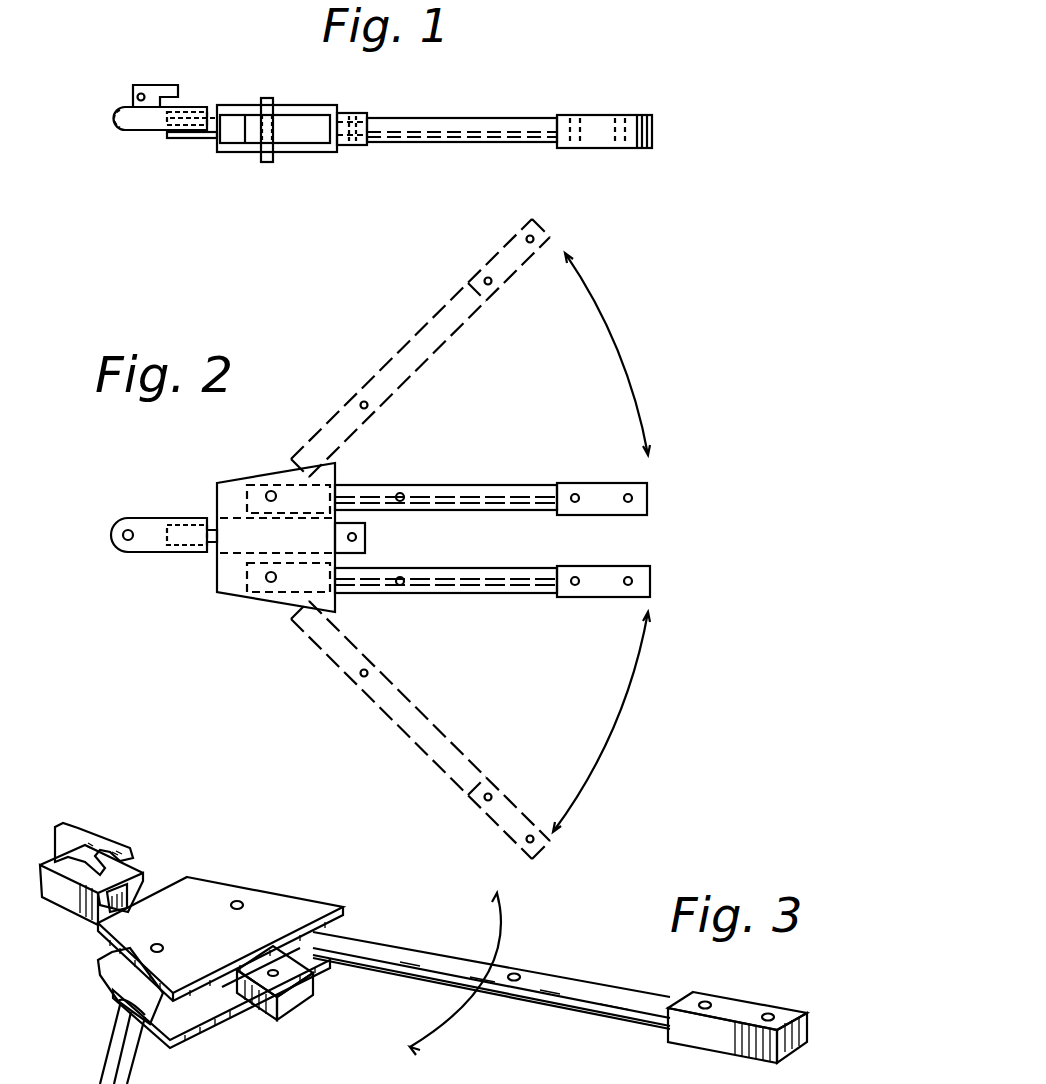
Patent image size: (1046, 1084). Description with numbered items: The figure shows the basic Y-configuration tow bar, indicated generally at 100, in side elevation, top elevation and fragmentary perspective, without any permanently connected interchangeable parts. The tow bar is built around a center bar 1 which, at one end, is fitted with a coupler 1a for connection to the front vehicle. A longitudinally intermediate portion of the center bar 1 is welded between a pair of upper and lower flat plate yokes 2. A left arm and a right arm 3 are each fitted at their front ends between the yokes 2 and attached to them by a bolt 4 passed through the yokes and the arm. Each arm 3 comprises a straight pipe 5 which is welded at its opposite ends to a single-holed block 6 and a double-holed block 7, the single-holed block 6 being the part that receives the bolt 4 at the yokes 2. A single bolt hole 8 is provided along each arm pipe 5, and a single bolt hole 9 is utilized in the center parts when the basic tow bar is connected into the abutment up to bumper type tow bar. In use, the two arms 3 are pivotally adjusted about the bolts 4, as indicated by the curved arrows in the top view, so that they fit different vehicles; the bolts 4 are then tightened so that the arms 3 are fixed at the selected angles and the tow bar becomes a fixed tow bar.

In FIG. 1, the towing device 100 is at (525, 79).
In FIG. 2, the towing device 100 is at (698, 384).
In FIG. 3, the towing device 100 is at (870, 991).
In FIG. 1, the center bar 1 is at (207, 140).
In FIG. 2, the center bar 1 is at (210, 548).
In FIG. 1, the coupler 1a is at (143, 85).
In FIG. 2, the coupler 1a is at (140, 518).
In FIG. 3, the coupler 1a is at (80, 835).
In FIG. 1, the flat plate yokes 2 is at (232, 105).
In FIG. 2, the flat plate yokes 2 is at (276, 537).
In FIG. 3, the flat plate yokes 2 is at (207, 893).
In FIG. 1, the left arm and right arm 3 is at (445, 158).
In FIG. 2, the left arm and right arm 3 is at (427, 322).
In FIG. 3, the left arm and right arm 3 is at (562, 961).
In FIG. 1, the bolt 4 is at (268, 98).
In FIG. 2, the bolt 4 is at (268, 492).
In FIG. 3, the bolt 4 is at (244, 903).
In FIG. 3, the straight pipe 5 is at (102, 1063).
In FIG. 3, the single-holed block 6 is at (113, 1000).
In FIG. 3, the double-holed block 7 is at (737, 1012).
In FIG. 2, the bolt hole 8 is at (402, 493).
In FIG. 3, the bolt hole 8 is at (514, 982).
In FIG. 2, the bolt hole 9 is at (357, 537).
In FIG. 3, the bolt hole 9 is at (287, 977).